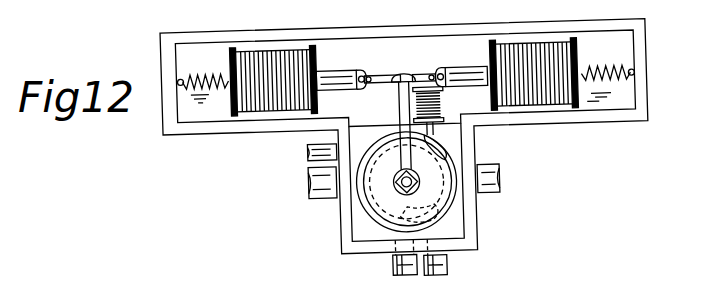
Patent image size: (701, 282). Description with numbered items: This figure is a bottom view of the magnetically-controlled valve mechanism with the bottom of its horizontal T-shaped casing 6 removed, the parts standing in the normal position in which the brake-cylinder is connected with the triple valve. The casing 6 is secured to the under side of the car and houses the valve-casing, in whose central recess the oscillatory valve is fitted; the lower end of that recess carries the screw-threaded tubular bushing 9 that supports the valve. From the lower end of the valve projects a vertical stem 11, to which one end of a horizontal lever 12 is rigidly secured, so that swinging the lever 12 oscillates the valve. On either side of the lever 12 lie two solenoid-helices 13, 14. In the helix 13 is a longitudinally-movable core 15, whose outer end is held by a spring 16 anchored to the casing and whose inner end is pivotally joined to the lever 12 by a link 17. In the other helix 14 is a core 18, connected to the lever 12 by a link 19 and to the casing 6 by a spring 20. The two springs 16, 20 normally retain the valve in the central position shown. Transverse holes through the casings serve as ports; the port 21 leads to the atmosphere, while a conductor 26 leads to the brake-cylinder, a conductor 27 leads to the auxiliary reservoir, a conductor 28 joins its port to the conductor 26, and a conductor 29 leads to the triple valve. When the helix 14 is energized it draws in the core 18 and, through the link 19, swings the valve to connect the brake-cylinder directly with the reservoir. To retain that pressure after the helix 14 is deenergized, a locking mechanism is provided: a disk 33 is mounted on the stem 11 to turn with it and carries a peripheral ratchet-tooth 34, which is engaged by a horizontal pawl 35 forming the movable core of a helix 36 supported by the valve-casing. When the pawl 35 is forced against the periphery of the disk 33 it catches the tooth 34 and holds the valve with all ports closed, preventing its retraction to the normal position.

The casing 6 is at (637, 136).
The tubular bushing 9 is at (381, 224).
The stem 11 is at (425, 184).
The lever 12 is at (400, 114).
The solenoid-helix 13 is at (270, 118).
The solenoid-helix 14 is at (553, 120).
The core 15 is at (341, 76).
The spring 16 is at (202, 73).
The link 17 is at (389, 82).
The core 18 is at (472, 76).
The link 19 is at (429, 82).
The spring 20 is at (595, 82).
The port 21 is at (307, 160).
The conductor 26 is at (307, 193).
The conductor 27 is at (499, 196).
The conductor 28 is at (389, 272).
The conductor 29 is at (443, 273).
The disk 33 is at (432, 203).
The ratchet-tooth 34 is at (440, 150).
The pawl 35 is at (480, 136).
The helix 36 is at (444, 112).